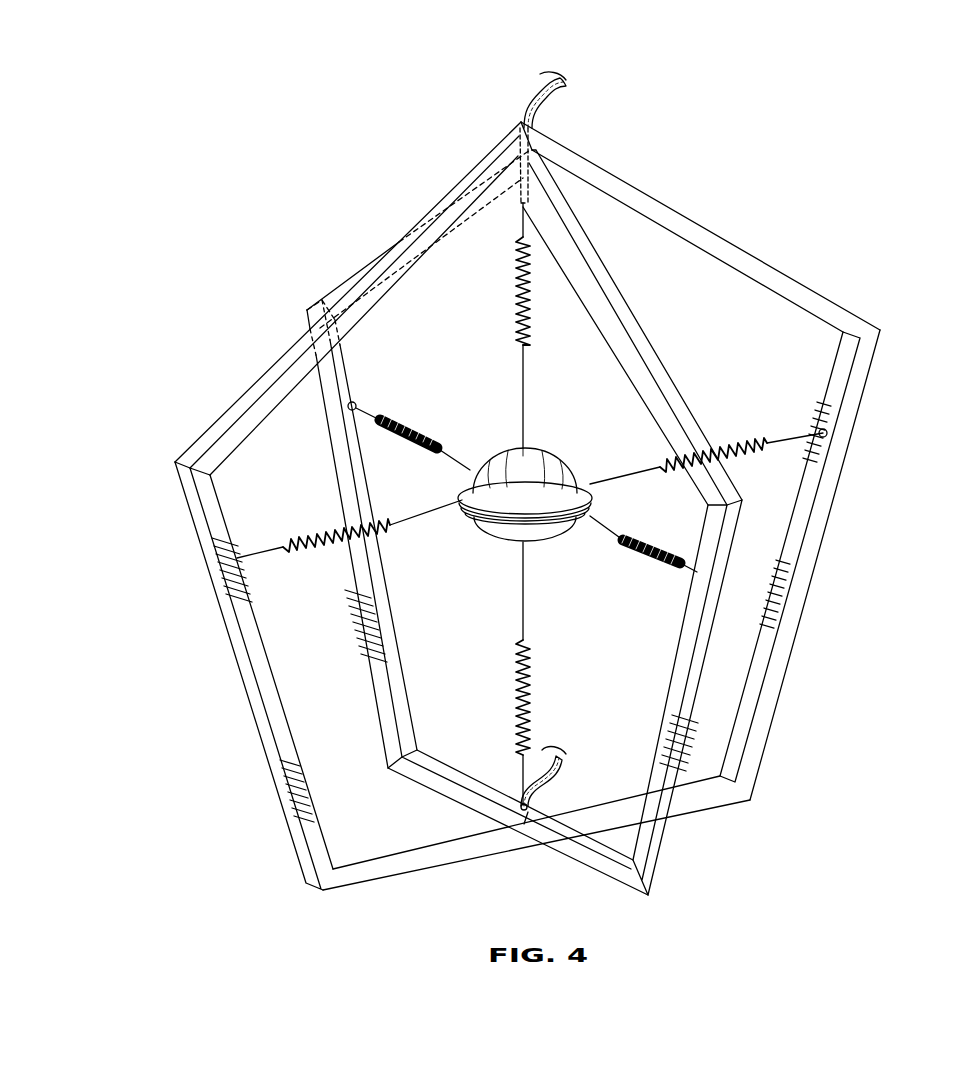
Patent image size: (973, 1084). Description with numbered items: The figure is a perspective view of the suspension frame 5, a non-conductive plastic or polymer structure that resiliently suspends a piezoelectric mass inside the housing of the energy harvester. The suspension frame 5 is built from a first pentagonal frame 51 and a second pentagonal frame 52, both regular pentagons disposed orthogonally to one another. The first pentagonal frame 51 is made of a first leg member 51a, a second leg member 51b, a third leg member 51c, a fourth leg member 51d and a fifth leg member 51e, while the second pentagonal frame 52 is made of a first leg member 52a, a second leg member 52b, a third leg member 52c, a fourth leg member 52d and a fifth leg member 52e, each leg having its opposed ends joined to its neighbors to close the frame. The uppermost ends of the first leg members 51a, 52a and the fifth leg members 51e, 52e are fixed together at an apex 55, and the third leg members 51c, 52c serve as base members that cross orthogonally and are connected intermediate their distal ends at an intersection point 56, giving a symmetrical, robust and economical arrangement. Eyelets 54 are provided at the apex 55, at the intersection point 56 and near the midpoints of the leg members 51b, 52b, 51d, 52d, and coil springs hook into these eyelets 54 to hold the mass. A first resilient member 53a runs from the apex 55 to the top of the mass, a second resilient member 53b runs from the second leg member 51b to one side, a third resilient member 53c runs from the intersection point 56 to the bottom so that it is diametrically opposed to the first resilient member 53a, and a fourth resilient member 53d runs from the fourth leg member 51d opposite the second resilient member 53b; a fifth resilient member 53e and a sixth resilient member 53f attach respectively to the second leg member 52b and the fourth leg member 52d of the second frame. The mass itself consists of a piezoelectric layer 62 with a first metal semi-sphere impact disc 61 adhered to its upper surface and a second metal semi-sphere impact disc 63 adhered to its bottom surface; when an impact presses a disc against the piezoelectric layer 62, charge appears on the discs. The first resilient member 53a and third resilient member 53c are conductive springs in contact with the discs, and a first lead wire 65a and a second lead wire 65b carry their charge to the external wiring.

The suspension frame 5 is at (350, 160).
The first pentagonal frame 51 is at (885, 316).
The first leg member 51a is at (790, 268).
The second leg member 51b is at (825, 580).
The third leg member 51c is at (712, 800).
The fourth leg member 51d is at (258, 732).
The fifth leg member 51e is at (290, 343).
The second pentagonal frame 52 is at (689, 380).
The first leg member 52a is at (655, 345).
The second leg member 52b is at (700, 714).
The third leg member 52c is at (600, 870).
The fourth leg member 52d is at (360, 636).
The fifth leg member 52e is at (347, 280).
The first resilient member 53a is at (520, 312).
The second resilient member 53b is at (735, 442).
The third resilient member 53c is at (515, 692).
The fourth resilient member 53d is at (300, 540).
The fifth resilient member 53e is at (652, 548).
The sixth resilient member 53f is at (410, 428).
The eyelet 54 is at (237, 558).
The apex 55 is at (518, 118).
The intersection point 56 is at (528, 847).
The first metal semi-sphere impact disc 61 is at (492, 478).
The piezoelectric layer 62 is at (531, 518).
The second metal semi-sphere impact disc 63 is at (560, 535).
The first lead wire 65a is at (535, 105).
The second lead wire 65b is at (560, 756).